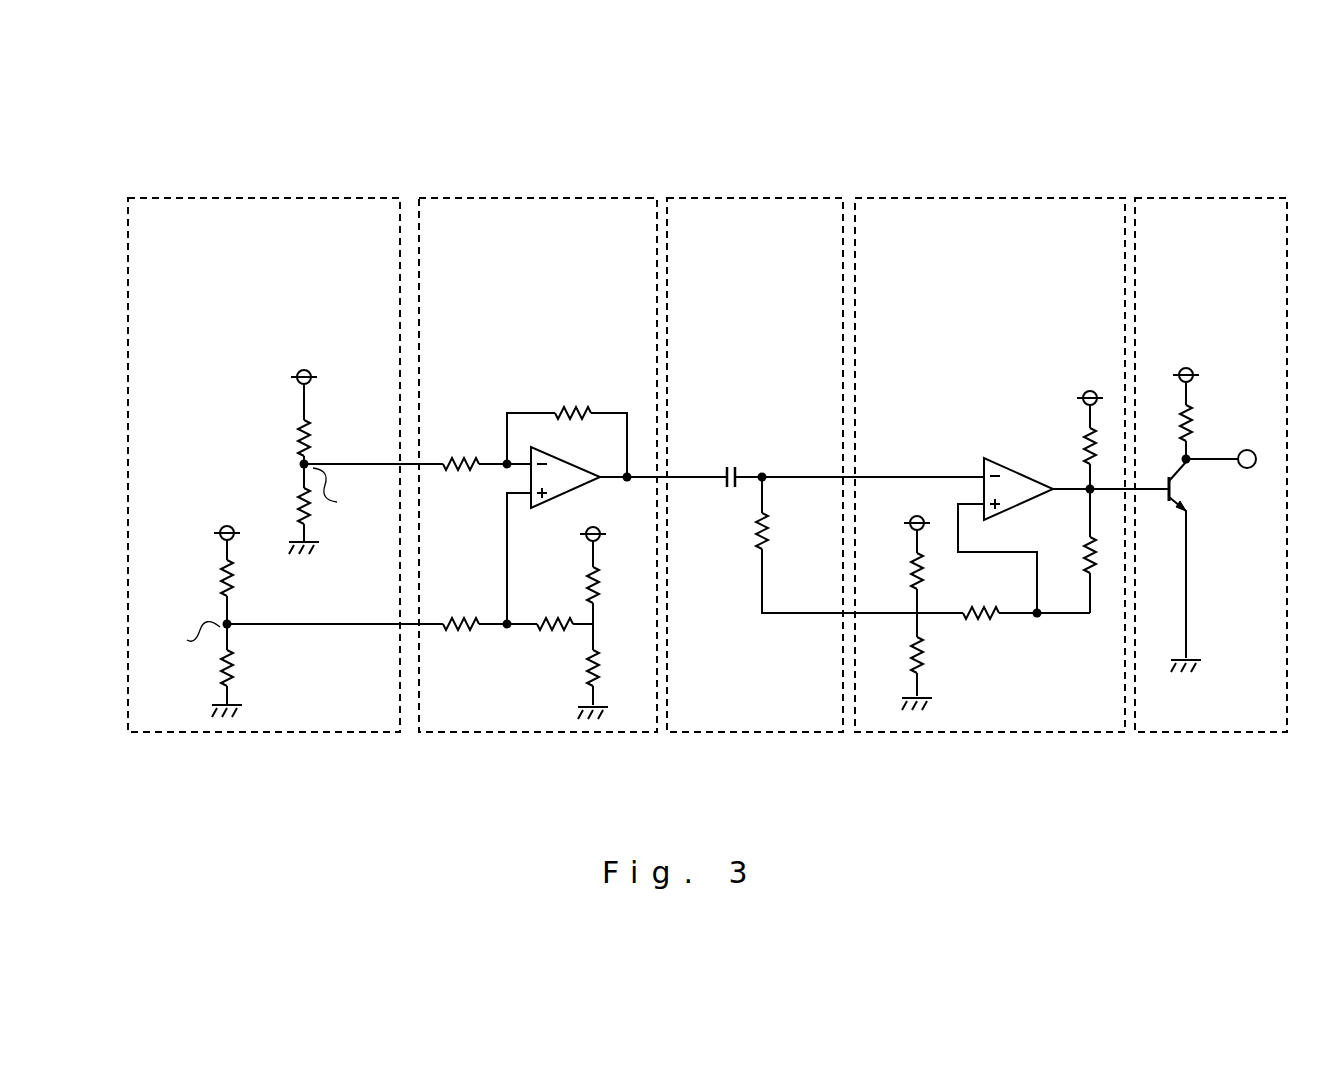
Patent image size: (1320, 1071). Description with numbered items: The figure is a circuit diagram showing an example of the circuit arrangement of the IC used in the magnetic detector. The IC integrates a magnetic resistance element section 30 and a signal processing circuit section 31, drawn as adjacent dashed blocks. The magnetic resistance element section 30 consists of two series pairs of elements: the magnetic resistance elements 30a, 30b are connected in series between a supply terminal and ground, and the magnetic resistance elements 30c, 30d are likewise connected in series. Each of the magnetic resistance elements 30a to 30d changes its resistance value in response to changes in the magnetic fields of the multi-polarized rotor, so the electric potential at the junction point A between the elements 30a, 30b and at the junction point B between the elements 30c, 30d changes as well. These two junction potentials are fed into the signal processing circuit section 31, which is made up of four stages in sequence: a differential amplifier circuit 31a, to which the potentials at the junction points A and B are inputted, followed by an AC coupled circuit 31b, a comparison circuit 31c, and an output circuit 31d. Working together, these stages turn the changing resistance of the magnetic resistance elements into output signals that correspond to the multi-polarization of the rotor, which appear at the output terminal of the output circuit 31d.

The magnetic resistance element section 30 is at (264, 404).
The magnetic resistance element 30a is at (238, 580).
The magnetic resistance element 30b is at (238, 667).
The magnetic resistance element 30c is at (293, 428).
The magnetic resistance element 30d is at (295, 510).
The signal processing circuit section 31 is at (1072, 70).
The differential amplifier circuit 31a is at (592, 199).
The AC coupled circuit 31b is at (735, 199).
The comparison circuit 31c is at (972, 199).
The output circuit 31d is at (1182, 197).